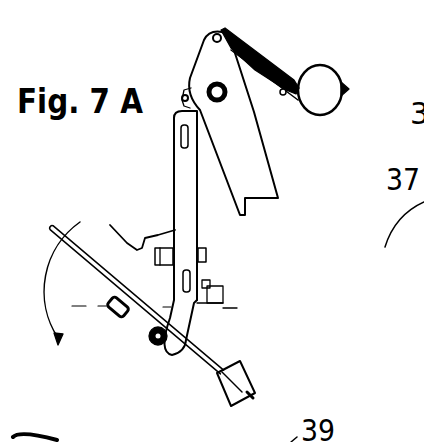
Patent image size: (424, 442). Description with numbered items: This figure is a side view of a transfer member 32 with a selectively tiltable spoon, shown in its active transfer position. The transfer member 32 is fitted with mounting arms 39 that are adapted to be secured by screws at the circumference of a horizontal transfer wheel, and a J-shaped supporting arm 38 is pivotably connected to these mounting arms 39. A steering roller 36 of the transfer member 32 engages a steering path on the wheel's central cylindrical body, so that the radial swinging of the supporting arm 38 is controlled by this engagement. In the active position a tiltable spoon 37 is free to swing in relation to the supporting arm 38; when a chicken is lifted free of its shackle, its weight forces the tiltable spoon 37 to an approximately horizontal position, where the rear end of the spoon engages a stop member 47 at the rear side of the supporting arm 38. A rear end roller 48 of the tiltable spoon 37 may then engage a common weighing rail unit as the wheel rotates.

The transfer member 32 is at (235, 258).
The steering roller 36 is at (320, 75).
The tiltable spoon 37 is at (93, 193).
The J-shaped supporting arm 38 is at (175, 203).
The mounting arms 39 is at (250, 157).
The stop member 47 is at (225, 292).
The rear end roller 48 is at (250, 370).